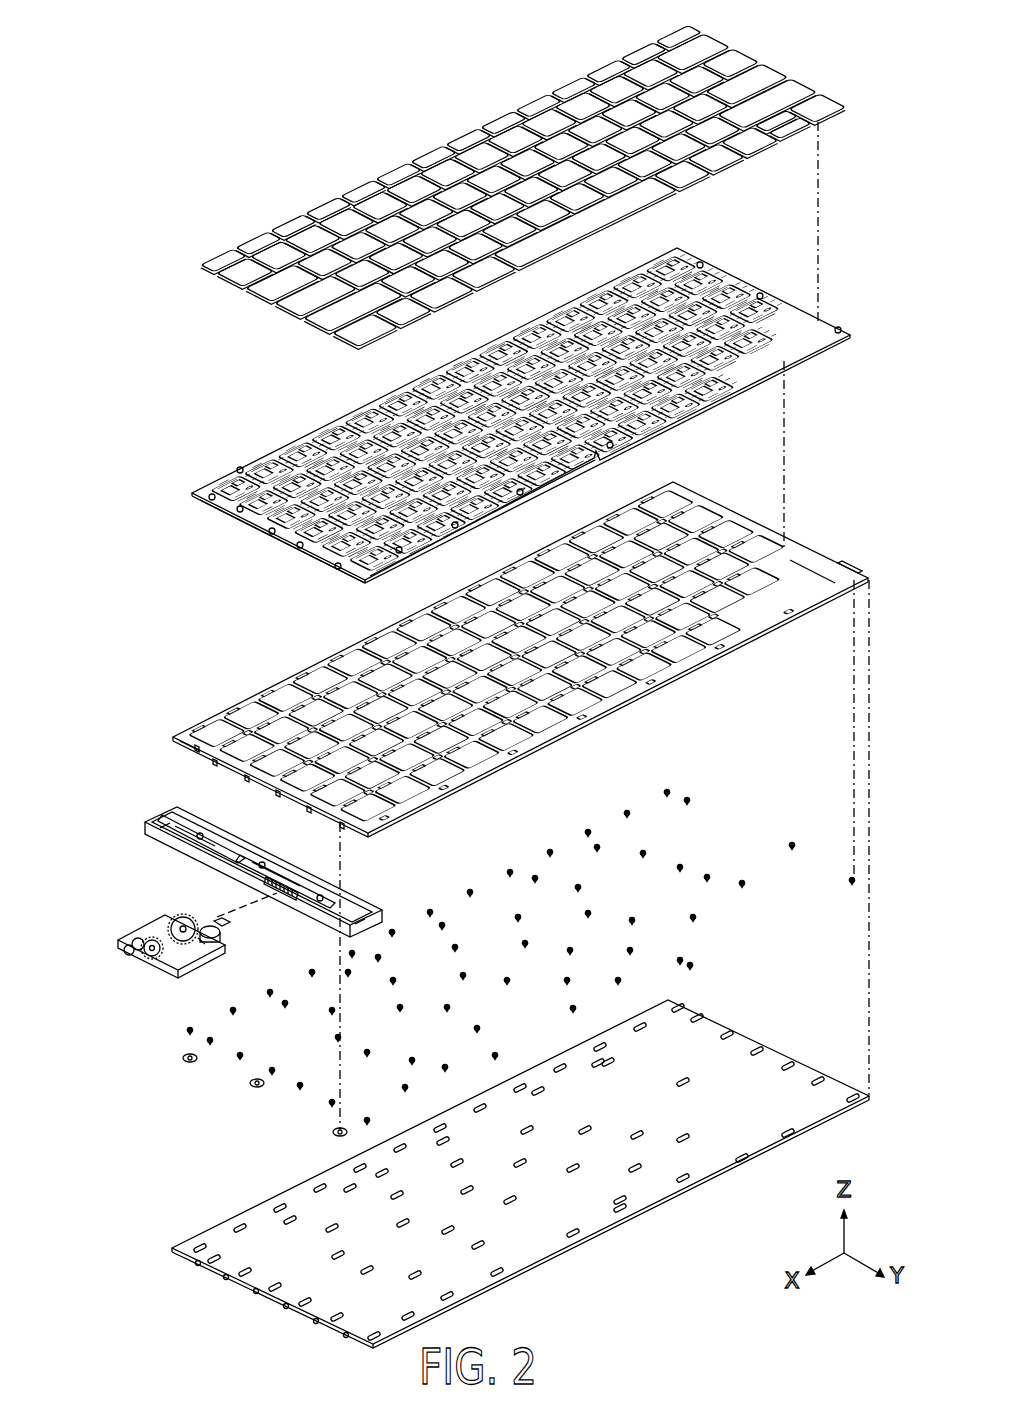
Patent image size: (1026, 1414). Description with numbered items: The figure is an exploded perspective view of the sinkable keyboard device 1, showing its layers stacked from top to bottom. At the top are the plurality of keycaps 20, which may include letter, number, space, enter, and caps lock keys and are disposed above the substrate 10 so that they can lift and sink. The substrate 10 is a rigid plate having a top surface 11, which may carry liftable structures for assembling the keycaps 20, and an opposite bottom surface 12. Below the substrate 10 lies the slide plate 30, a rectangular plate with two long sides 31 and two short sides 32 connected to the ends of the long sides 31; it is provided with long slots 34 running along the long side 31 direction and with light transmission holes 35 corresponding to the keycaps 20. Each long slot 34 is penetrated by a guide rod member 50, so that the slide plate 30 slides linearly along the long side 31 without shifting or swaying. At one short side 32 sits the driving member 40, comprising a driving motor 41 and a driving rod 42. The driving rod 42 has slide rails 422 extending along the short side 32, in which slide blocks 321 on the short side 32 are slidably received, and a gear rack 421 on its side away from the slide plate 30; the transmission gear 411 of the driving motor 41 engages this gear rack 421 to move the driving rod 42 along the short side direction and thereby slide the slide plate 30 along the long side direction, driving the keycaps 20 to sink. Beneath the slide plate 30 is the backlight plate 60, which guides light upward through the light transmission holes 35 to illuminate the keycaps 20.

The sinkable keyboard device 1 is at (46, 66).
The substrate 10 is at (203, 462).
The top surface 11 is at (247, 478).
The bottom surface 12 is at (290, 536).
The keycaps 20 is at (404, 174).
The slide plate 30 is at (180, 705).
The long sides 31 is at (233, 700).
The short sides 32 is at (210, 760).
The slide blocks 321 is at (193, 753).
The long slots 34 is at (516, 753).
The light transmission holes 35 is at (640, 680).
The driving member 40 is at (97, 825).
The driving motor 41 is at (163, 915).
The transmission gear 411 is at (222, 934).
The driving rod 42 is at (170, 837).
The gear rack 421 is at (281, 900).
The slide rails 422 is at (213, 826).
The guide rod member 50 is at (480, 888).
The backlight plate 60 is at (815, 1066).